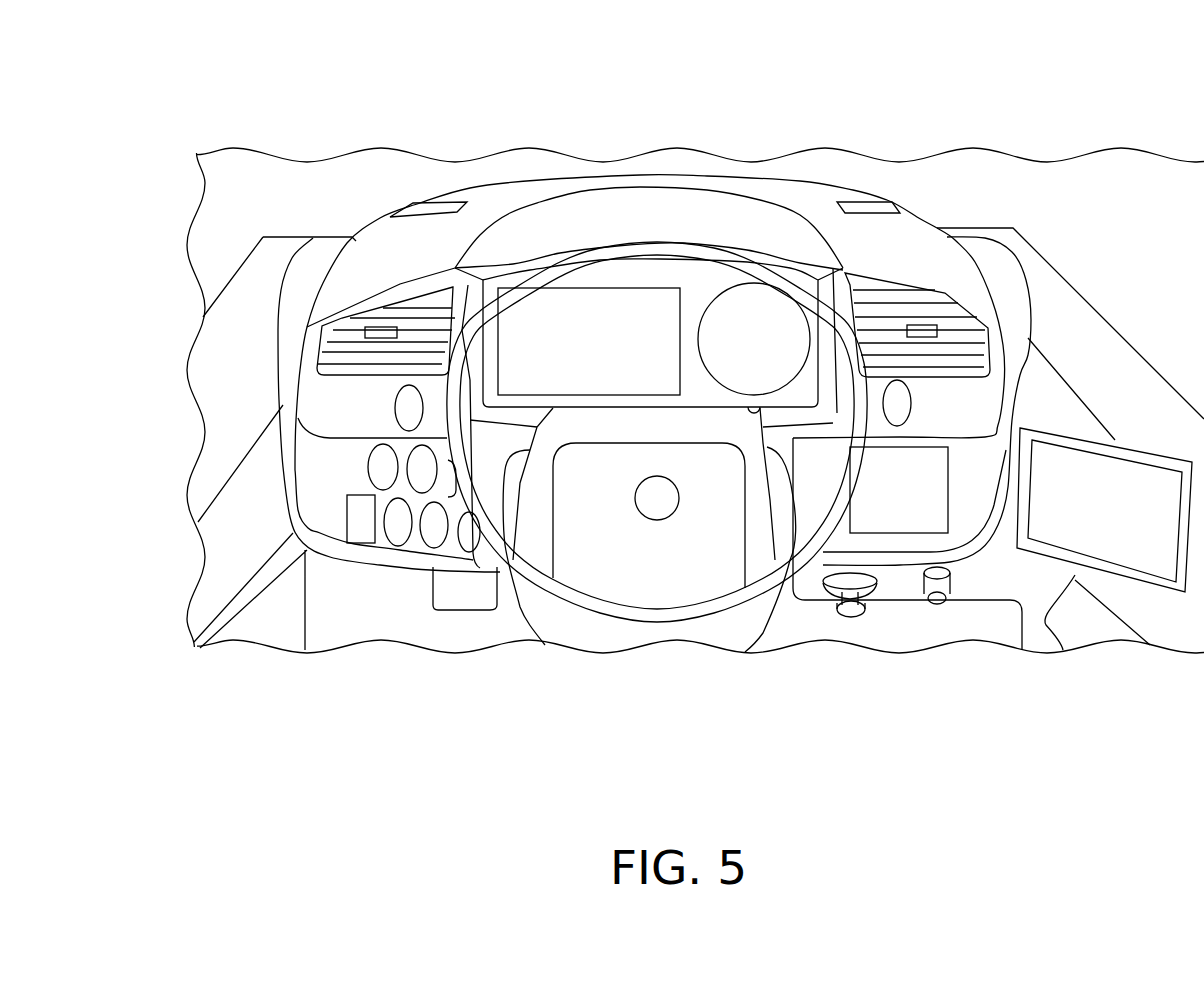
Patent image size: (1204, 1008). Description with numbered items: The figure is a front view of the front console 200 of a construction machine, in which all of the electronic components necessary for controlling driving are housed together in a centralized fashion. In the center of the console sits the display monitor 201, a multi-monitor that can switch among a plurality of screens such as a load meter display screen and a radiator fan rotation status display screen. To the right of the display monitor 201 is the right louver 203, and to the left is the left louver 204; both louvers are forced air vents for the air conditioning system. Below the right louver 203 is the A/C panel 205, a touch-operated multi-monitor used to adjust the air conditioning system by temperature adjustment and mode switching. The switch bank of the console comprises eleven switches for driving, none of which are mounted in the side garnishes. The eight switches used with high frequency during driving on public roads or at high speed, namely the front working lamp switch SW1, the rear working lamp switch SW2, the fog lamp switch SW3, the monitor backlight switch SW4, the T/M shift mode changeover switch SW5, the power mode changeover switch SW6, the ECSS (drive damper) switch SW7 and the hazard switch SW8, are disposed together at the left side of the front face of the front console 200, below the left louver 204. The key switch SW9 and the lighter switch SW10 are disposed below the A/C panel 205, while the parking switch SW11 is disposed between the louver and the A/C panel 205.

The front console 200 is at (308, 121).
The display monitor 201 is at (622, 307).
The right louver 203 is at (957, 327).
The left louver 204 is at (425, 307).
The A/C panel 205 is at (943, 513).
The front working lamp switch SW1 is at (360, 520).
The rear working lamp switch SW2 is at (398, 520).
The fog lamp switch SW3 is at (433, 520).
The monitor backlight switch SW4 is at (480, 548).
The T/M shift mode changeover switch SW5 is at (383, 474).
The power mode changeover switch SW6 is at (420, 460).
The ECSS (drive damper) switch SW7 is at (468, 540).
The hazard switch SW8 is at (408, 408).
The key switch SW9 is at (850, 617).
The lighter switch SW10 is at (937, 607).
The parking switch SW11 is at (895, 400).